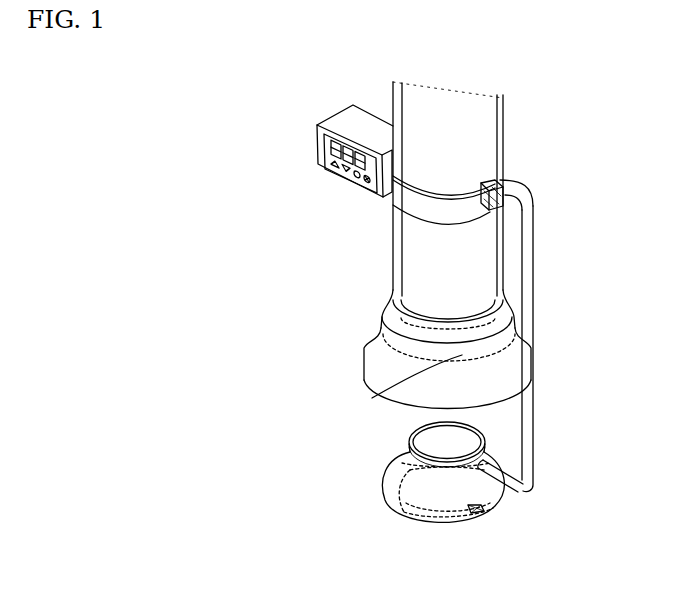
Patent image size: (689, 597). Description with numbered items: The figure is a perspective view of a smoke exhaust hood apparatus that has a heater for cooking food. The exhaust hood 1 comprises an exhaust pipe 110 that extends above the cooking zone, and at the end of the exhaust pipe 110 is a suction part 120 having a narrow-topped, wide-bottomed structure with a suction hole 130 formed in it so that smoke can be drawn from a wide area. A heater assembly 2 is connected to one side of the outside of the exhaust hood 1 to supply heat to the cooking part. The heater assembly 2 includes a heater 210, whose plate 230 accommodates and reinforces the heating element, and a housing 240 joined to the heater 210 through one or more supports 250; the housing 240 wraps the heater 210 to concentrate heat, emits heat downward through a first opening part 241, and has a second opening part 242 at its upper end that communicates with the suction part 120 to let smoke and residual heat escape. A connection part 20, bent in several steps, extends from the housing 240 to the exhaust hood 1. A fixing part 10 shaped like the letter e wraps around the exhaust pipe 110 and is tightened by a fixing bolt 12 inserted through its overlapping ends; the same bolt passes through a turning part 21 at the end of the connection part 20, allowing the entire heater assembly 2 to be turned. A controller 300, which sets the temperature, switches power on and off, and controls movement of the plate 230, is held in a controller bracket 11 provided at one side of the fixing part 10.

The exhaust hood 1 is at (384, 249).
The heater assembly 2 is at (549, 420).
The fixing part 10 is at (408, 200).
The controller bracket 11 is at (317, 136).
The fixing bolt 12 is at (506, 205).
The connection part 20 is at (536, 265).
The turning part 21 is at (502, 191).
The exhaust pipe 110 is at (483, 117).
The suction part 120 is at (374, 356).
The suction hole 130 is at (373, 399).
The heater 210 is at (424, 509).
The plate 230 is at (386, 490).
The housing 240 is at (400, 456).
The first opening part 241 is at (502, 514).
The second opening part 242 is at (472, 425).
The support 250 is at (476, 514).
The controller 300 is at (331, 129).